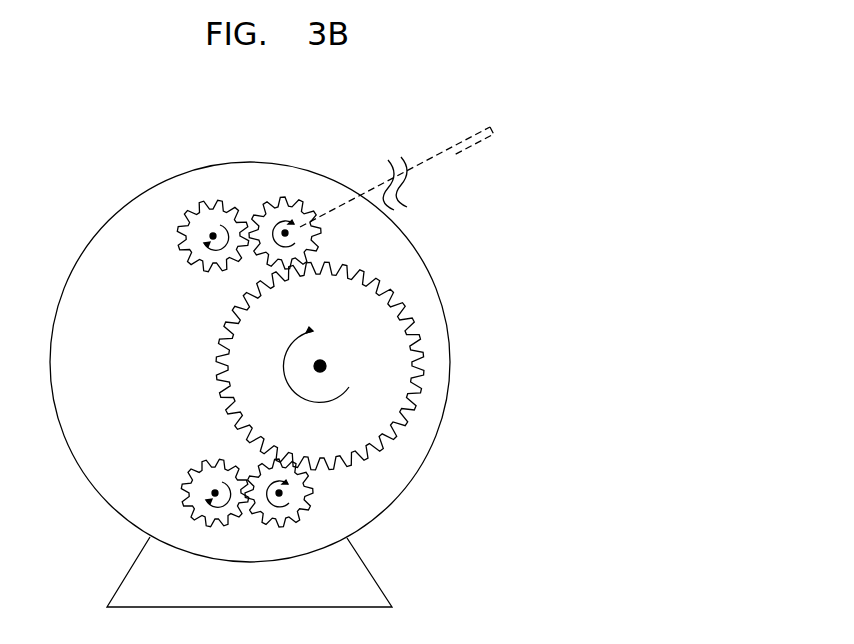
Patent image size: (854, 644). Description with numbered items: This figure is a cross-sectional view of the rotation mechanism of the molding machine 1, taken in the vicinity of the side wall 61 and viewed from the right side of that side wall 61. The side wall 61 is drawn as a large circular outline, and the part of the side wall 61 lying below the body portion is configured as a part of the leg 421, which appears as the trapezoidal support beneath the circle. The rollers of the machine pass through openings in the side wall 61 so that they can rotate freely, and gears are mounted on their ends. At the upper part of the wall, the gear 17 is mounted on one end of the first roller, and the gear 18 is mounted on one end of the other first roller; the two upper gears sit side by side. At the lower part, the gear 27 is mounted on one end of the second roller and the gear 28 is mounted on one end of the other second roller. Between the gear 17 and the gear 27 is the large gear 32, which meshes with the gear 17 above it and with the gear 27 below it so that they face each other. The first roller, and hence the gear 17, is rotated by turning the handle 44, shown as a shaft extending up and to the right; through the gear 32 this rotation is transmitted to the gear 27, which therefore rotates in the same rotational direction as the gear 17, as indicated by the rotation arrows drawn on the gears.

The molding machine 1 is at (398, 115).
The gear 17 is at (318, 236).
The gear 18 is at (179, 240).
The gear 27 is at (307, 497).
The gear 28 is at (182, 490).
The gear 32 is at (217, 372).
The handle 44 is at (456, 150).
The side wall 61 is at (385, 500).
The leg 421 is at (377, 578).